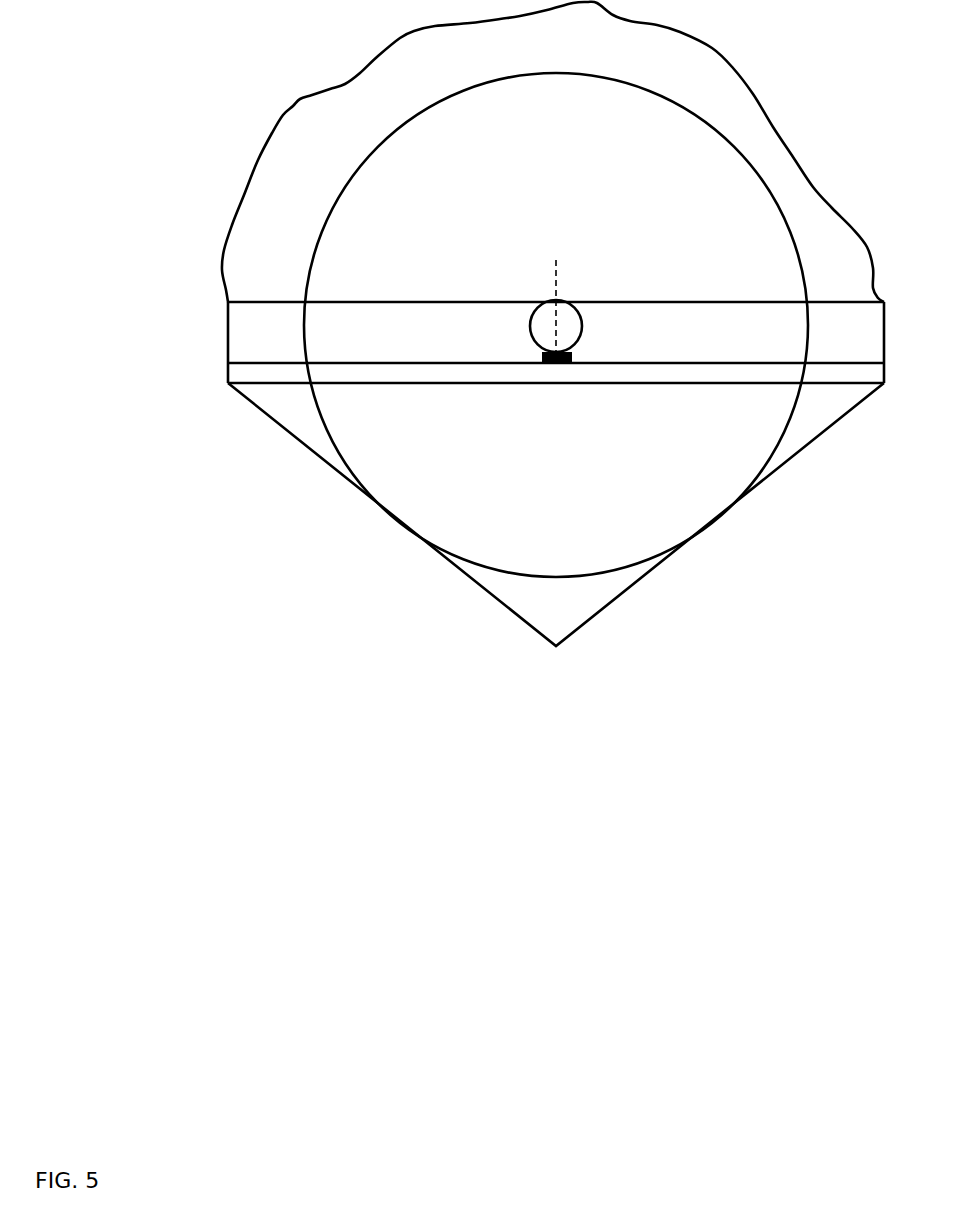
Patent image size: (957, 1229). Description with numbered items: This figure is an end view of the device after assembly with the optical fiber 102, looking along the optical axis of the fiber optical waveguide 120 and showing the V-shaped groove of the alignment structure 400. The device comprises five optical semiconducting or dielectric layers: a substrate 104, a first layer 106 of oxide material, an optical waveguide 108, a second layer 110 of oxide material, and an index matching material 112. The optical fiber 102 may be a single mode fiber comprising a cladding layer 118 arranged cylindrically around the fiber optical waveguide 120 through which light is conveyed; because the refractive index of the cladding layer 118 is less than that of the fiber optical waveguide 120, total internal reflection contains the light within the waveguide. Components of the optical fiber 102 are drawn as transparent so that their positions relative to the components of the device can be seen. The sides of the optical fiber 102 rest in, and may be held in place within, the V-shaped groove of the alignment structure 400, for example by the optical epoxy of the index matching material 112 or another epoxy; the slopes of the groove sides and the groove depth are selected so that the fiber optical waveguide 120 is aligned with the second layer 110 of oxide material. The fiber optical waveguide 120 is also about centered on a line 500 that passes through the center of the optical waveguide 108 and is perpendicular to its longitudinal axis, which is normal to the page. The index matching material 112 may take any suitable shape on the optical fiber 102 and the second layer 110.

The optical fiber 102 is at (366, 148).
The substrate 104 is at (265, 444).
The first layer of oxide material 106 is at (407, 386).
The optical waveguide 108 is at (558, 364).
The second layer of oxide material 110 is at (229, 328).
The index matching material 112 is at (293, 107).
The cladding layer 118 is at (566, 218).
The fiber optical waveguide 120 is at (531, 320).
The alignment structure 400 is at (556, 514).
The line 500 is at (555, 273).